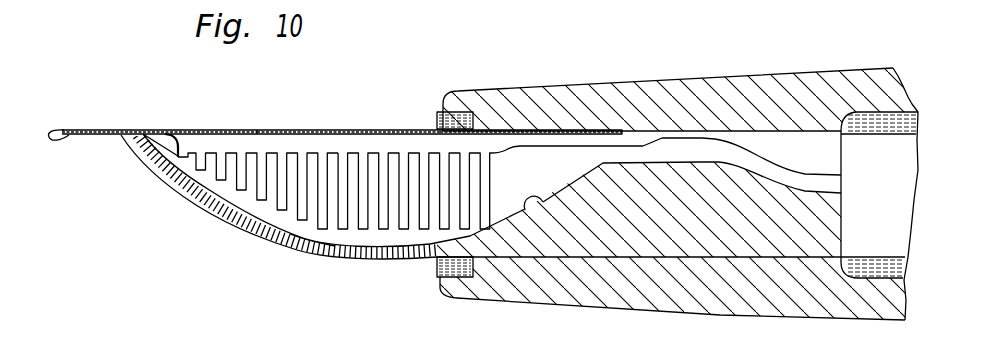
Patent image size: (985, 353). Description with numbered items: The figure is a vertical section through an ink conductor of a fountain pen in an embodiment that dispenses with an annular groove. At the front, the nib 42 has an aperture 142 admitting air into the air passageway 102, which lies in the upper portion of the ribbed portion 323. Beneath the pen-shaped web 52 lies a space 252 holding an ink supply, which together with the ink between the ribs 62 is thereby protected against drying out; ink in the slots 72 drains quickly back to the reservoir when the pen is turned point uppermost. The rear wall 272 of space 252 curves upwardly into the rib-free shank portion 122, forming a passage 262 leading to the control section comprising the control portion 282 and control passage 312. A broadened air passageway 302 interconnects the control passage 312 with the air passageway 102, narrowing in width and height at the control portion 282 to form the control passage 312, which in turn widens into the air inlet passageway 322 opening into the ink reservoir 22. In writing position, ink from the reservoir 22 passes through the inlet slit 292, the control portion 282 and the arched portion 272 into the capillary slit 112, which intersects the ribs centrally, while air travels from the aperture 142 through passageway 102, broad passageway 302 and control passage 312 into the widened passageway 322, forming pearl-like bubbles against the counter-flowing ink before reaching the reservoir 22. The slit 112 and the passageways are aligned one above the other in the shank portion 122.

The ink reservoir 22 is at (905, 193).
The nib 42 is at (181, 129).
The web 52 is at (290, 240).
The ribs 62 is at (314, 157).
The slots 72 is at (368, 158).
The air passageway 102 is at (395, 137).
The capillary slit 112 is at (308, 235).
The rib-free shank portion 122 is at (703, 247).
The aperture 142 is at (263, 129).
The space 252 is at (228, 201).
The passage 262 is at (547, 183).
The rear wall 272 is at (538, 205).
The control portion 282 is at (650, 162).
The inlet slit 292 is at (826, 184).
The broadened air passageway 302 is at (585, 140).
The control passage 312 is at (690, 136).
The air inlet passageway 322 is at (828, 150).
The ribbed portion 323 is at (262, 216).